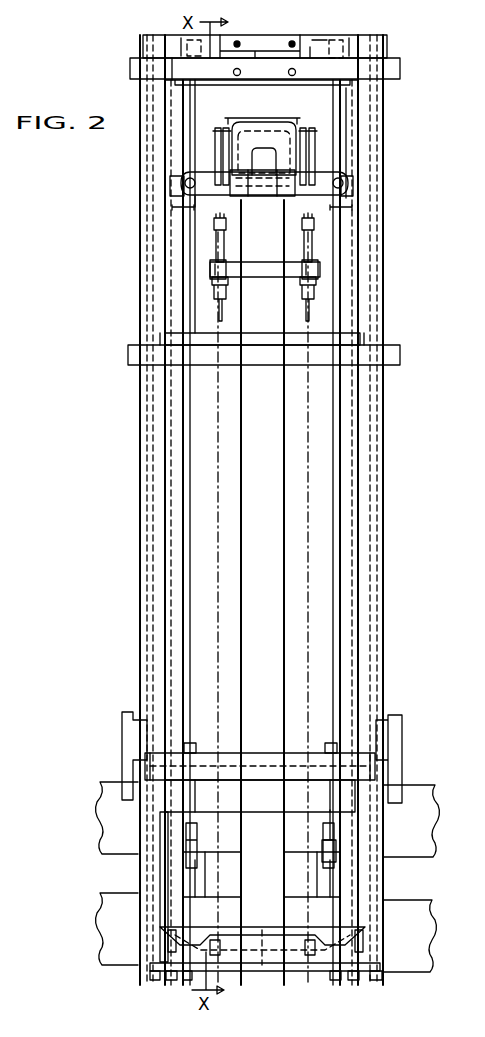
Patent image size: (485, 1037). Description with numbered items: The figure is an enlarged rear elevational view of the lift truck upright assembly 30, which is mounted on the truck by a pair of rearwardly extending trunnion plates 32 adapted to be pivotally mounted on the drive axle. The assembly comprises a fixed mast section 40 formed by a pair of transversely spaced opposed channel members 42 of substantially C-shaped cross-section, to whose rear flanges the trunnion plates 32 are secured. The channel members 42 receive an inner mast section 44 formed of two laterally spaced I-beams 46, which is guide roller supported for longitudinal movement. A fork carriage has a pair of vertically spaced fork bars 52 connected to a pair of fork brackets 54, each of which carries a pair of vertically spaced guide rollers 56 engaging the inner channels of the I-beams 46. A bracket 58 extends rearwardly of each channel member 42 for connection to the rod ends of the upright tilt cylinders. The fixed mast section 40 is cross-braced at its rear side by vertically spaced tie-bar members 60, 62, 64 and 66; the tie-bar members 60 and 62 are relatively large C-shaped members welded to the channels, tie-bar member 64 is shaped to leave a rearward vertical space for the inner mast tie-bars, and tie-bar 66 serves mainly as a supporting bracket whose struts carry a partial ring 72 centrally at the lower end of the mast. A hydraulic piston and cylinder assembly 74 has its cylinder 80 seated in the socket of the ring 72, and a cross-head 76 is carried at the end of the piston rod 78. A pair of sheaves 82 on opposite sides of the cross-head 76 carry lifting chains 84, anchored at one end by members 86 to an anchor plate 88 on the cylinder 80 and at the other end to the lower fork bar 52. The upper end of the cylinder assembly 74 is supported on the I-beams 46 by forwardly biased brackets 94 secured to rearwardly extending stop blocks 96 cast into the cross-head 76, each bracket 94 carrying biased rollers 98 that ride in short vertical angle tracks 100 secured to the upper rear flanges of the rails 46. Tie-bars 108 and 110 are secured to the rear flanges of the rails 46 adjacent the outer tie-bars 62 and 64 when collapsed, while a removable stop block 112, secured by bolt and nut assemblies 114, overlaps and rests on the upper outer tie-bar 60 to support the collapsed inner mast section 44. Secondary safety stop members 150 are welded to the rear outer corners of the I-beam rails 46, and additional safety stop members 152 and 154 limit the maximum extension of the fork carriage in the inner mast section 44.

The upright assembly 30 is at (388, 414).
The trunnion plates 32 is at (383, 976).
The fixed mast section 40 is at (385, 520).
The channel members 42 is at (365, 468).
The inner mast section 44 is at (187, 490).
The I-beams 46 is at (180, 442).
The fork bars 52 is at (118, 902).
The fork brackets 54 is at (328, 745).
The guide rollers 56 is at (170, 978).
The bracket 58 is at (122, 725).
The tie-bar member 60 is at (400, 71).
The tie-bar member 62 is at (393, 348).
The tie-bar member 64 is at (365, 776).
The tie-bar 66 is at (310, 972).
The partial ring 72 is at (272, 975).
The hydraulic piston and cylinder assembly 74 is at (287, 446).
The cross-head 76 is at (238, 125).
The piston rod 78 is at (215, 205).
The cylinder 80 is at (270, 400).
The sheaves 82 is at (217, 145).
The lifting chains 84 is at (217, 556).
The anchor members 86 is at (218, 250).
The anchor plate 88 is at (268, 270).
The brackets 94 is at (205, 194).
The stop blocks 96 is at (274, 196).
The biased roller 98 is at (172, 162).
The vertical angle tracks 100 is at (356, 110).
The tie-bar 108 is at (198, 335).
The tie-bar 110 is at (263, 800).
The stop block 112 is at (265, 43).
The bolt and nut assemblies 114 is at (302, 74).
The secondary safety stop members 150 is at (138, 818).
The safety stop member 152 is at (340, 852).
The safety stop member 154 is at (178, 36).